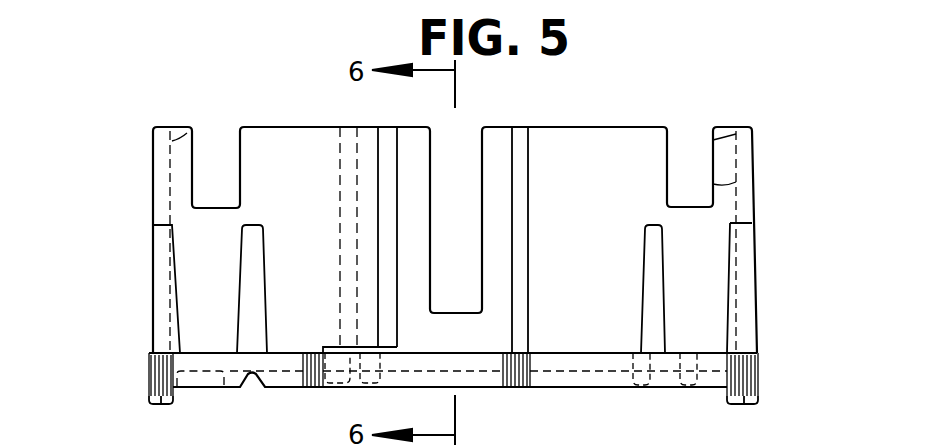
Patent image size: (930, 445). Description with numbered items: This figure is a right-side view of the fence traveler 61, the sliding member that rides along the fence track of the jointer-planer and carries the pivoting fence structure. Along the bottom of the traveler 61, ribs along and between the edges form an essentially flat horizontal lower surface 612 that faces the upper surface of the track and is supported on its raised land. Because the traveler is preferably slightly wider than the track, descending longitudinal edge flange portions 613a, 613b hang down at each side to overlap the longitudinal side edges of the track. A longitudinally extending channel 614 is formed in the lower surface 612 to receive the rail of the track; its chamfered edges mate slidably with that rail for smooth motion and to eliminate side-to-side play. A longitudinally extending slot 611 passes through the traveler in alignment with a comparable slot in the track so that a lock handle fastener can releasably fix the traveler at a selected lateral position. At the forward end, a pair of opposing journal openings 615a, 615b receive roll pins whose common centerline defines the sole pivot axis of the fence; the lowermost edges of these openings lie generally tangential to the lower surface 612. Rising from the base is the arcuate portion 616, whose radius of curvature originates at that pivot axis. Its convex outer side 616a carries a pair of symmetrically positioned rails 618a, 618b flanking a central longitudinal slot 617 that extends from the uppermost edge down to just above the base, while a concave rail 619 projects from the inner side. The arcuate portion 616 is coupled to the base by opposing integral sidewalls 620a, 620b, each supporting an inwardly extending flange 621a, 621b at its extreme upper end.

The fence traveler 61 is at (153, 300).
The longitudinally extending slot 611 is at (355, 392).
The lower surface 612 is at (567, 388).
The descending longitudinal edge flange portion 613a is at (177, 396).
The descending longitudinal edge flange portion 613b is at (727, 392).
The longitudinally extending channel 614 is at (255, 376).
The journal opening 615a is at (155, 407).
The journal opening 615b is at (762, 406).
The arcuate portion 616 is at (608, 157).
The convex outer side 616a is at (617, 277).
The central longitudinal slot 617 is at (463, 170).
The rail 618a is at (392, 141).
The rail 618b is at (517, 147).
The concave rail 619 is at (345, 155).
The sidewall 620a is at (152, 190).
The sidewall 620b is at (757, 172).
The inwardly extending flange 621a is at (184, 136).
The inwardly extending flange 621b is at (728, 134).